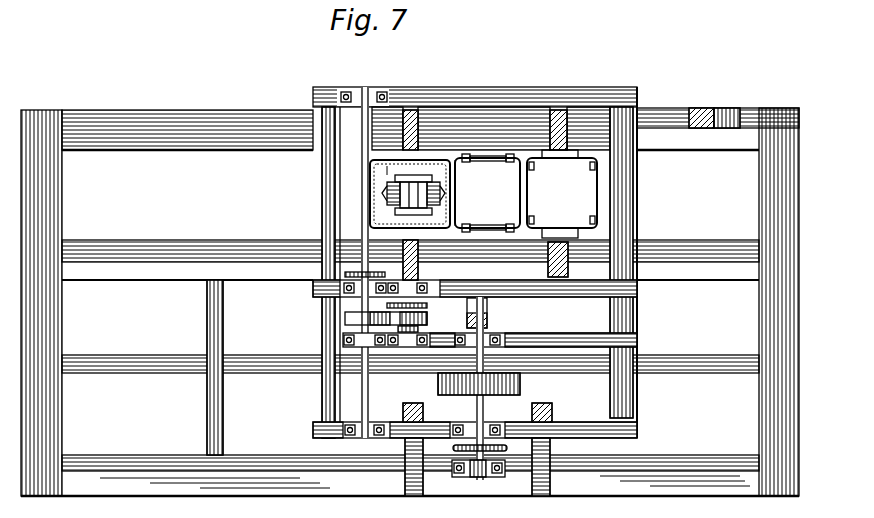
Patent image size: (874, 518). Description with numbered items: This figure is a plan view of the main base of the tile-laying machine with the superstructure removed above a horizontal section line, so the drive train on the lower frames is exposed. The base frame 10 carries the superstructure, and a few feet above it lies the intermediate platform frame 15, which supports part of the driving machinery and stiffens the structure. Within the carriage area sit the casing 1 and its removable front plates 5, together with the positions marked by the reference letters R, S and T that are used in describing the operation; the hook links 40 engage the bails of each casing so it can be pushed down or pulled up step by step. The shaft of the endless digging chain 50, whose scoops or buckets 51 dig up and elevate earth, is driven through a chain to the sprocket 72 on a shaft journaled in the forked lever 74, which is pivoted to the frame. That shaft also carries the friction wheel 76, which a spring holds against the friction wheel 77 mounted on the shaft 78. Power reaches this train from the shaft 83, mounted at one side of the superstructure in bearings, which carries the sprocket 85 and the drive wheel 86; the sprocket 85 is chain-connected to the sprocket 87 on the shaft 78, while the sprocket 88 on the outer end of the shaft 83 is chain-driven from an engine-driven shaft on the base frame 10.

The casing 1 is at (487, 158).
The plates 5 is at (500, 195).
The base frame 10 is at (290, 482).
The intermediate platform frame 15 is at (322, 212).
The hook links 40 is at (556, 150).
The endless digging chain 50 is at (740, 498).
The scoops or buckets 51 is at (398, 190).
The sprocket 72 is at (335, 305).
The forked lever 74 is at (430, 328).
The friction wheel 76 is at (345, 340).
The friction wheel 77 is at (345, 318).
The shaft 78 is at (395, 161).
The shaft 83 is at (484, 408).
The sprocket 85 is at (447, 355).
The drive wheel 86 is at (520, 388).
The sprocket 87 is at (345, 272).
The sprocket 88 is at (507, 450).
The reference letter T is at (340, 237).
The reference letter S is at (487, 193).
The reference letter R is at (597, 200).